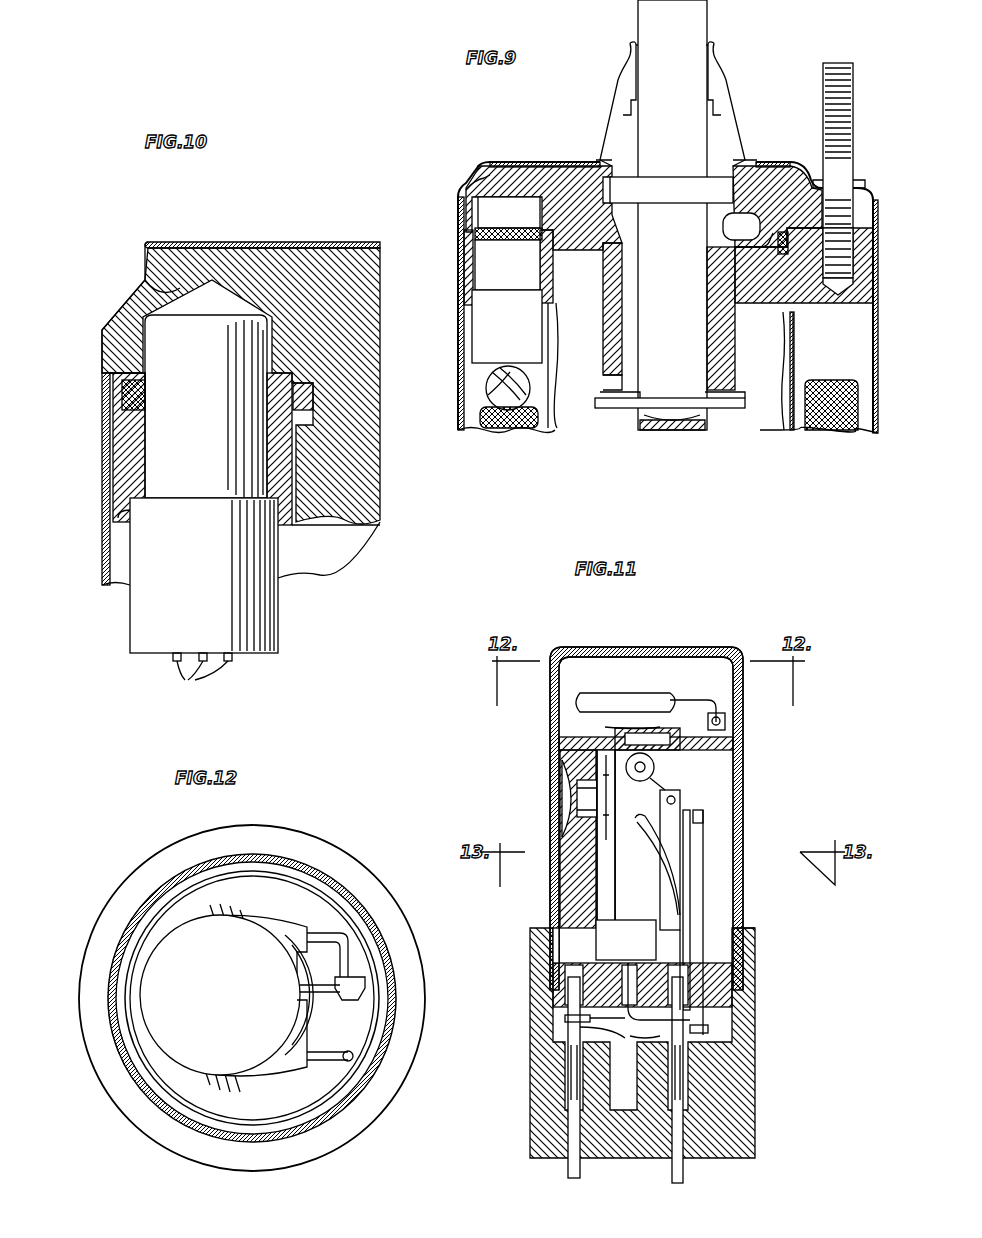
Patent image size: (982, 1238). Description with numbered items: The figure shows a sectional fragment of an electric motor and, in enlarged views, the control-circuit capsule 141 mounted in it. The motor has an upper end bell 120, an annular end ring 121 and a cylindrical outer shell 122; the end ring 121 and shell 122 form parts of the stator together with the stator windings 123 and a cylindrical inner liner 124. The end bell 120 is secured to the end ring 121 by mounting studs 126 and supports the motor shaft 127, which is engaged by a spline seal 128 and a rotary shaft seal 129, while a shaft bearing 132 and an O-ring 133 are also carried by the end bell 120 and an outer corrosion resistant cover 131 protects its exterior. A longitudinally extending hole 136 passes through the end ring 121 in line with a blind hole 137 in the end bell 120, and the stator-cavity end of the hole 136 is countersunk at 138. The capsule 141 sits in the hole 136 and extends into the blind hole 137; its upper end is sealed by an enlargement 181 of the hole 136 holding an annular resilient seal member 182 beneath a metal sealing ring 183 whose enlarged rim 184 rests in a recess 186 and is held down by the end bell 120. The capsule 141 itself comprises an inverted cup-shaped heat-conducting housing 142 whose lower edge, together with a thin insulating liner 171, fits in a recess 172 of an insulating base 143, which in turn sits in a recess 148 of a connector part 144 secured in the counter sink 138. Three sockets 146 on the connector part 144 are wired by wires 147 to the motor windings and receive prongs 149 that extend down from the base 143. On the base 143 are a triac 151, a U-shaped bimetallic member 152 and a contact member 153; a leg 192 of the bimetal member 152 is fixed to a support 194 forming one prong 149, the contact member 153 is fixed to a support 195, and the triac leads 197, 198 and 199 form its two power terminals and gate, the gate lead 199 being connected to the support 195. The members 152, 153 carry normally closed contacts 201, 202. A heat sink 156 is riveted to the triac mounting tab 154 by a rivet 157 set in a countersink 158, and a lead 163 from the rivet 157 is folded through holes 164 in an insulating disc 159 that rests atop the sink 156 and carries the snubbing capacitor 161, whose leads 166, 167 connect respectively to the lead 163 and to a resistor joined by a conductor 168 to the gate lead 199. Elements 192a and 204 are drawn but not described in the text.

In FIG. 9, the upper end bell 120 is at (548, 170).
In FIG. 10, the upper end bell 120 is at (257, 242).
In FIG. 9, the annular end ring 121 is at (865, 250).
In FIG. 10, the annular end ring 121 is at (296, 524).
In FIG. 9, the cylindrical outer shell 122 is at (878, 318).
In FIG. 10, the cylindrical outer shell 122 is at (104, 563).
In FIG. 9, the stator windings 123 is at (860, 393).
In FIG. 9, the cylindrical inner liner 124 is at (796, 364).
In FIG. 9, the mounting studs 126 is at (850, 160).
In FIG. 9, the motor shaft 127 is at (700, 24).
In FIG. 9, the spline seal 128 is at (712, 86).
In FIG. 9, the rotary shaft seal 129 is at (650, 186).
In FIG. 9, the outer corrosion resistant cover 131 is at (858, 188).
In FIG. 10, the outer corrosion resistant cover 131 is at (332, 242).
In FIG. 9, the shaft bearing 132 is at (626, 292).
In FIG. 9, the O-ring 133 is at (781, 257).
In FIG. 9, the longitudinally extending hole 136 is at (466, 262).
In FIG. 10, the longitudinally extending hole 136 is at (256, 460).
In FIG. 9, the blind hole 137 is at (490, 165).
In FIG. 10, the blind hole 137 is at (140, 280).
In FIG. 10, the counter sink 138 is at (120, 520).
In FIG. 9, the capsule 141 is at (508, 243).
In FIG. 10, the capsule 141 is at (206, 406).
In FIG. 11, the capsule 141 is at (761, 825).
In FIG. 12, the capsule 141 is at (389, 851).
In FIG. 11, the housing 142 is at (743, 728).
In FIG. 12, the housing 142 is at (392, 958).
In FIG. 11, the base 143 is at (745, 982).
In FIG. 9, the connector part 144 is at (507, 326).
In FIG. 10, the connector part 144 is at (270, 618).
In FIG. 11, the connector part 144 is at (745, 1120).
In FIG. 12, the connector part 144 is at (392, 913).
In FIG. 9, the sockets 146 is at (487, 374).
In FIG. 10, the sockets 146 is at (198, 677).
In FIG. 11, the sockets 146 is at (660, 1192).
In FIG. 9, the wires 147 is at (489, 394).
In FIG. 11, the recess 148 is at (573, 1017).
In FIG. 11, the prongs 149 is at (634, 1050).
In FIG. 11, the triac 151 is at (626, 925).
In FIG. 11, the bimetallic heat-responsive member 152 is at (743, 877).
In FIG. 11, the contact member 153 is at (743, 852).
In FIG. 11, the mounting tab 154 is at (604, 840).
In FIG. 11, the heat sink 156 is at (572, 882).
In FIG. 11, the rivet 157 is at (580, 800).
In FIG. 11, the countersink 158 is at (560, 768).
In FIG. 11, the disc 159 is at (743, 748).
In FIG. 12, the disc 159 is at (245, 985).
In FIG. 11, the snubbing capacitor 161 is at (632, 702).
In FIG. 12, the snubbing capacitor 161 is at (226, 995).
In FIG. 11, the lead 163 is at (642, 828).
In FIG. 12, the lead 163 is at (328, 1000).
In FIG. 11, the holes 164 is at (607, 740).
In FIG. 12, the capacitor lead 166 is at (328, 925).
In FIG. 12, the capacitor lead 167 is at (325, 1062).
In FIG. 11, the conductor 168 is at (675, 818).
In FIG. 11, the liner 171 is at (572, 688).
In FIG. 12, the liner 171 is at (325, 1110).
In FIG. 11, the recess 172 is at (548, 966).
In FIG. 10, the enlargement 181 is at (112, 430).
In FIG. 10, the annular resilient seal member 182 is at (290, 432).
In FIG. 10, the metal sealing ring 183 is at (141, 377).
In FIG. 10, the enlarged rim 184 is at (290, 373).
In FIG. 10, the recess 186 is at (110, 390).
In FIG. 11, the leg 192 is at (743, 835).
In FIG. 11, the pivot 192a is at (656, 767).
In FIG. 11, the support 194 is at (680, 950).
In FIG. 11, the support 195 is at (755, 946).
In FIG. 11, the triac lead 197 is at (585, 1027).
In FIG. 11, the triac lead 198 is at (648, 1015).
In FIG. 11, the triac gate lead 199 is at (700, 1010).
In FIG. 11, the normally closed contact 201 is at (743, 793).
In FIG. 11, the normally closed contact 202 is at (743, 812).
In FIG. 11, the arm 204 is at (667, 870).